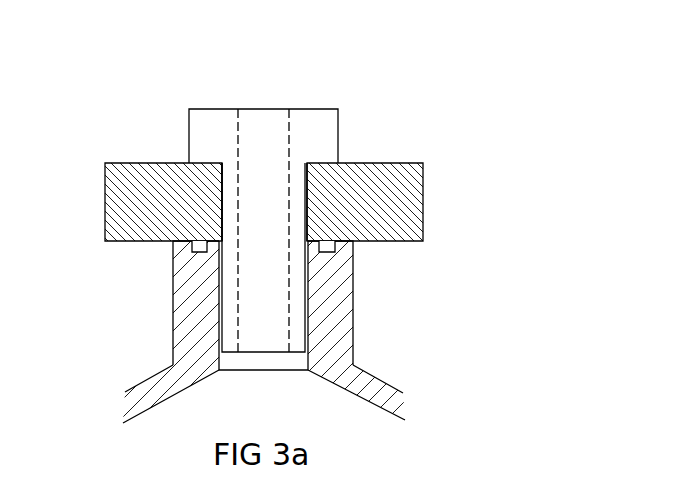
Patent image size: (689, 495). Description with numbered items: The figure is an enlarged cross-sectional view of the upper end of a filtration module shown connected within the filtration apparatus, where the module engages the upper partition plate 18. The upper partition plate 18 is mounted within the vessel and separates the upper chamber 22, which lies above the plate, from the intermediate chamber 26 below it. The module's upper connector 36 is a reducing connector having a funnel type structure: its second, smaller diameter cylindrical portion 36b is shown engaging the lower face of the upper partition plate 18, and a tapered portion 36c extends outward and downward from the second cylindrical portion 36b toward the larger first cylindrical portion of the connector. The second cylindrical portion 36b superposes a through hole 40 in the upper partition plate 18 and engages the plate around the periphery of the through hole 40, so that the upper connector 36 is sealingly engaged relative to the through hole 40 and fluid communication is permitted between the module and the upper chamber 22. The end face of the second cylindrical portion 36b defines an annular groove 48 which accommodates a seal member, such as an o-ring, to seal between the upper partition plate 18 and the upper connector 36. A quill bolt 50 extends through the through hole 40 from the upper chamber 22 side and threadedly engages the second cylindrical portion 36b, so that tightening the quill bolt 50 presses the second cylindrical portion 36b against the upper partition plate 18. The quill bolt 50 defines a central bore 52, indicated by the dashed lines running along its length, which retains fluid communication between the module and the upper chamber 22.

The upper partition plate 18 is at (140, 176).
The upper chamber 22 is at (393, 122).
The intermediate chamber 26 is at (395, 322).
The upper connector 36 is at (120, 262).
The second cylindrical portion 36b is at (185, 299).
The tapered portion 36c is at (148, 392).
The through hole 40 is at (307, 187).
The annular groove 48 is at (333, 248).
The quill bolt 50 is at (210, 118).
The central bore 52 is at (260, 188).